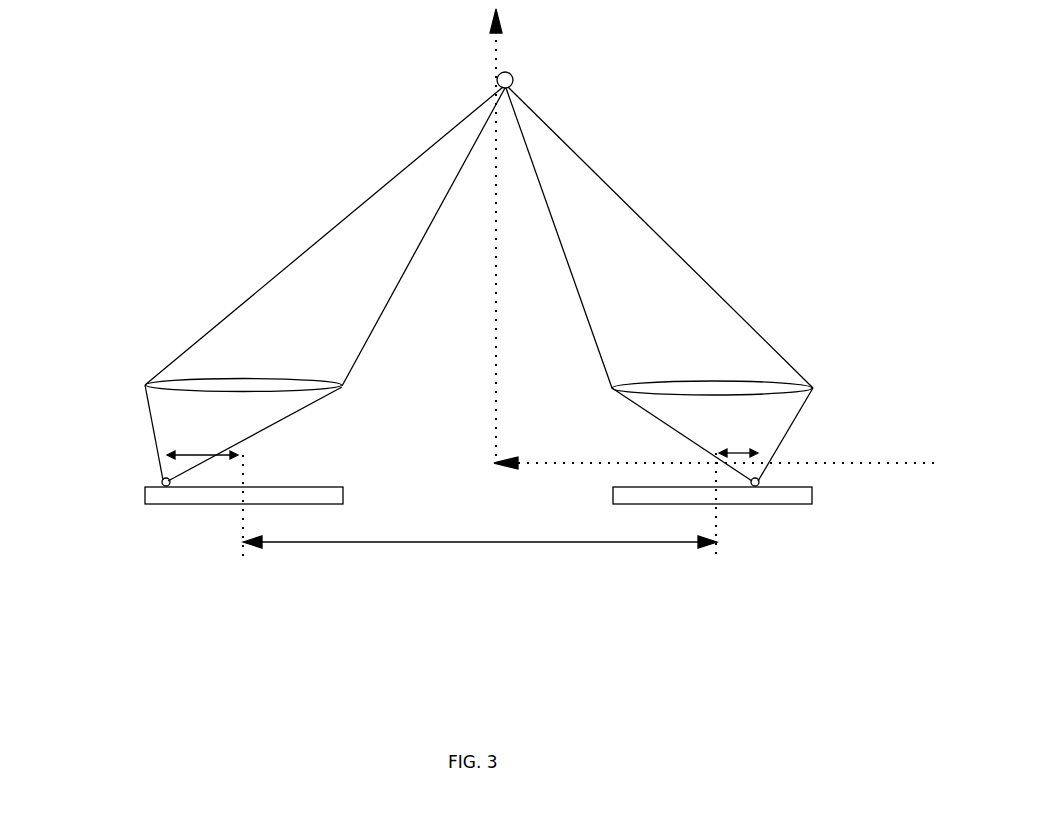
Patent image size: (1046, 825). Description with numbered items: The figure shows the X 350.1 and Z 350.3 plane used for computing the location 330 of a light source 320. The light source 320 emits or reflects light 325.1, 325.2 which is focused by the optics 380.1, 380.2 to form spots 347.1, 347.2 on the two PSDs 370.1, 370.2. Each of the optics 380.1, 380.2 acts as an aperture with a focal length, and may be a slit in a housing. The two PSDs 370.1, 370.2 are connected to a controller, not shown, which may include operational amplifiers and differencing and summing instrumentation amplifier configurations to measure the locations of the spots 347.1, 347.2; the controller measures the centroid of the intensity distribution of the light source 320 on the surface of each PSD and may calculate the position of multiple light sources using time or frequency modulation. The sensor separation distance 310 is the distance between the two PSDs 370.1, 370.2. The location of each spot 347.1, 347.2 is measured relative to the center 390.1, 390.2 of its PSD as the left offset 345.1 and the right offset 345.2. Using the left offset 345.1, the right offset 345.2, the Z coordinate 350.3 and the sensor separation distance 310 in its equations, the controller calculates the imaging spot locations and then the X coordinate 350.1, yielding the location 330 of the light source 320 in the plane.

The distance S_D 310 is at (510, 560).
The light source 320 is at (498, 72).
The light 325.1 is at (435, 143).
The light 325.2 is at (613, 172).
The location of the light source 330 is at (578, 70).
The x_L 345.1 is at (205, 435).
The x_R 345.2 is at (737, 430).
The spot 347.1 is at (150, 483).
The spot 347.2 is at (767, 472).
The X axis 350.1 is at (540, 437).
The Z axis 350.3 is at (470, 333).
The PSD 370.1 is at (173, 505).
The PSD 370.2 is at (788, 502).
The optics 380.1 is at (153, 380).
The optics 380.2 is at (793, 385).
The center of the PSD 390.1 is at (243, 547).
The center of the PSD 390.2 is at (718, 550).